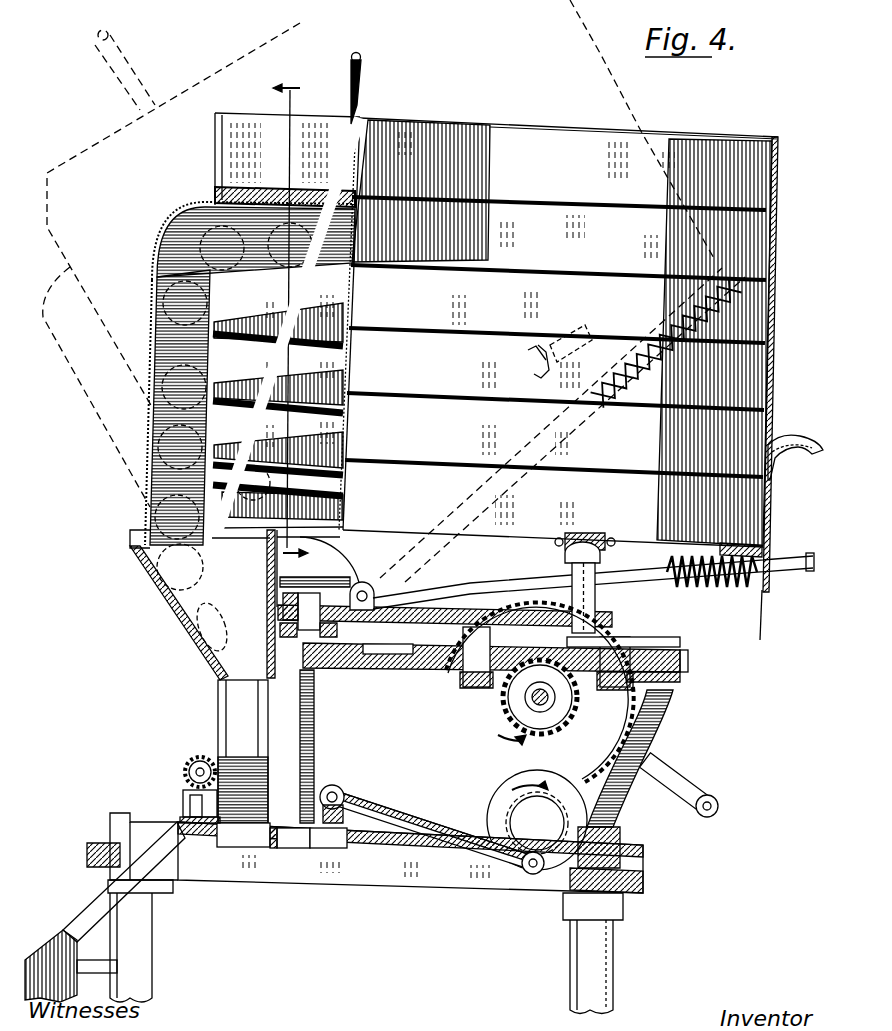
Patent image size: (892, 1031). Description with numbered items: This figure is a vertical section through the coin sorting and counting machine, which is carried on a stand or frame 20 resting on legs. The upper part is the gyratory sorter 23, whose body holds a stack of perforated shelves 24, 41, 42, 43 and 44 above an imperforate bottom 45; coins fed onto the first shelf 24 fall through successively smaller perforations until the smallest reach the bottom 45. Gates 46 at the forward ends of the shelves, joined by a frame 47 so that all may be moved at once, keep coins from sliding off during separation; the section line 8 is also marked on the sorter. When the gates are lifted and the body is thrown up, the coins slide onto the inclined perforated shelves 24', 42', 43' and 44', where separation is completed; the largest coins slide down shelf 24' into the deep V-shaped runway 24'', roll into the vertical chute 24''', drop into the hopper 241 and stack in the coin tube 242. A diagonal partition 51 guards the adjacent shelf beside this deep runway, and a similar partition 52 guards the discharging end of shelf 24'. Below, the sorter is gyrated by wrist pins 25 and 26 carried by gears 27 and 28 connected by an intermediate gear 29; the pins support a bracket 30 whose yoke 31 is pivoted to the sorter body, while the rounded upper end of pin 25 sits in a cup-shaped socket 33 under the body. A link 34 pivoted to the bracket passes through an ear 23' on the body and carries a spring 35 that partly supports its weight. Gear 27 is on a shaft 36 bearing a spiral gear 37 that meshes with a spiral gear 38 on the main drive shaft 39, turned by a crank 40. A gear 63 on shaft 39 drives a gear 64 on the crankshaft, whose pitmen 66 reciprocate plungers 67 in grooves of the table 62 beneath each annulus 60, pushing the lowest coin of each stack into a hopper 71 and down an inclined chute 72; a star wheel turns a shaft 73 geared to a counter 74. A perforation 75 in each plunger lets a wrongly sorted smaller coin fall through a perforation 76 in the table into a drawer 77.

The section line 8 is at (290, 322).
The stand or frame 20 is at (153, 943).
The gyratory sorter 23 is at (581, 339).
The ear 23' is at (761, 628).
The first shelf 24 is at (558, 210).
The inclined shelf 24' is at (256, 159).
The V-shaped runway 24'' is at (253, 217).
The vertical chute 24''' is at (154, 407).
The wrist pin 25 is at (580, 596).
The wrist pin 26 is at (319, 592).
The gear 27 is at (657, 638).
The gear 28 is at (290, 638).
The intermediate gear 29 is at (440, 645).
The bracket 30 is at (407, 597).
The yoke 31 is at (317, 567).
The cup-shaped socket 33 is at (567, 558).
The link 34 is at (473, 587).
The spring 35 is at (713, 580).
The shaft 36 is at (673, 677).
The spiral gear 37 is at (673, 717).
The spiral gear 38 is at (557, 717).
The main drive shaft 39 is at (532, 701).
The crank 40 is at (693, 790).
The perforated shelf 41 is at (609, 262).
The perforated shelf 42 is at (571, 326).
The inclined shelf 42' is at (321, 382).
The perforated shelf 43 is at (557, 425).
The inclined shelf 43' is at (313, 439).
The perforated shelf 44 is at (555, 426).
The inclined shelf 44' is at (306, 497).
The imperforate bottom 45 is at (520, 527).
The gates 46 is at (377, 435).
The frame 47 is at (385, 75).
The partition 51 is at (487, 231).
The partition 52 is at (495, 143).
The annulus 60 is at (278, 797).
The table 62 is at (237, 832).
The gear 63 is at (483, 750).
The gear 64 is at (507, 807).
The pitmen 66 is at (393, 807).
The plunger 67 is at (255, 840).
The hopper 71 is at (145, 830).
The inclined chute 72 is at (87, 912).
The shaft 73 is at (185, 793).
The counter 74 is at (187, 762).
The perforation 75 is at (280, 826).
The perforation 76 is at (300, 848).
The drawer 77 is at (320, 848).
The hopper 241 is at (183, 587).
The coin tube 242 is at (222, 712).